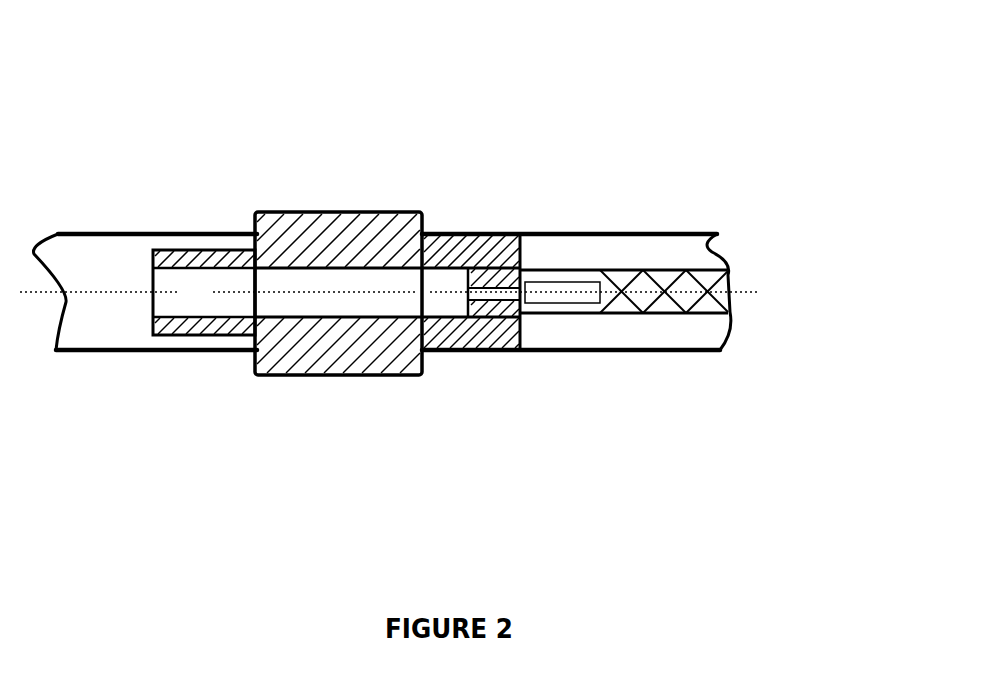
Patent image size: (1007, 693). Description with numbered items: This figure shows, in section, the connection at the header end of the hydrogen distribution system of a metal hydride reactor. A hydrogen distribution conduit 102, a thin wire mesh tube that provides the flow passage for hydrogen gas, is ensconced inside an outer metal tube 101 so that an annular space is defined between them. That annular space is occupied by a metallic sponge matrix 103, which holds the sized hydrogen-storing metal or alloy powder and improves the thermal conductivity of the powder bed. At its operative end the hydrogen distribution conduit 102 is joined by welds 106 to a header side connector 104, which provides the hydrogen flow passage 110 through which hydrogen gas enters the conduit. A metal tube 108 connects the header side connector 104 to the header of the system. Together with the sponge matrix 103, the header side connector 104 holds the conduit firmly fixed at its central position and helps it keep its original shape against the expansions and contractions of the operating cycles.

The outer metal tube 101 is at (633, 347).
The hydrogen distribution conduit 102 is at (621, 315).
The metallic sponge matrix 103 is at (641, 248).
The header side connector 104 is at (355, 389).
The welds 106 is at (536, 240).
The metal tube 108 is at (126, 211).
The hydrogen flow passage 110 is at (449, 280).